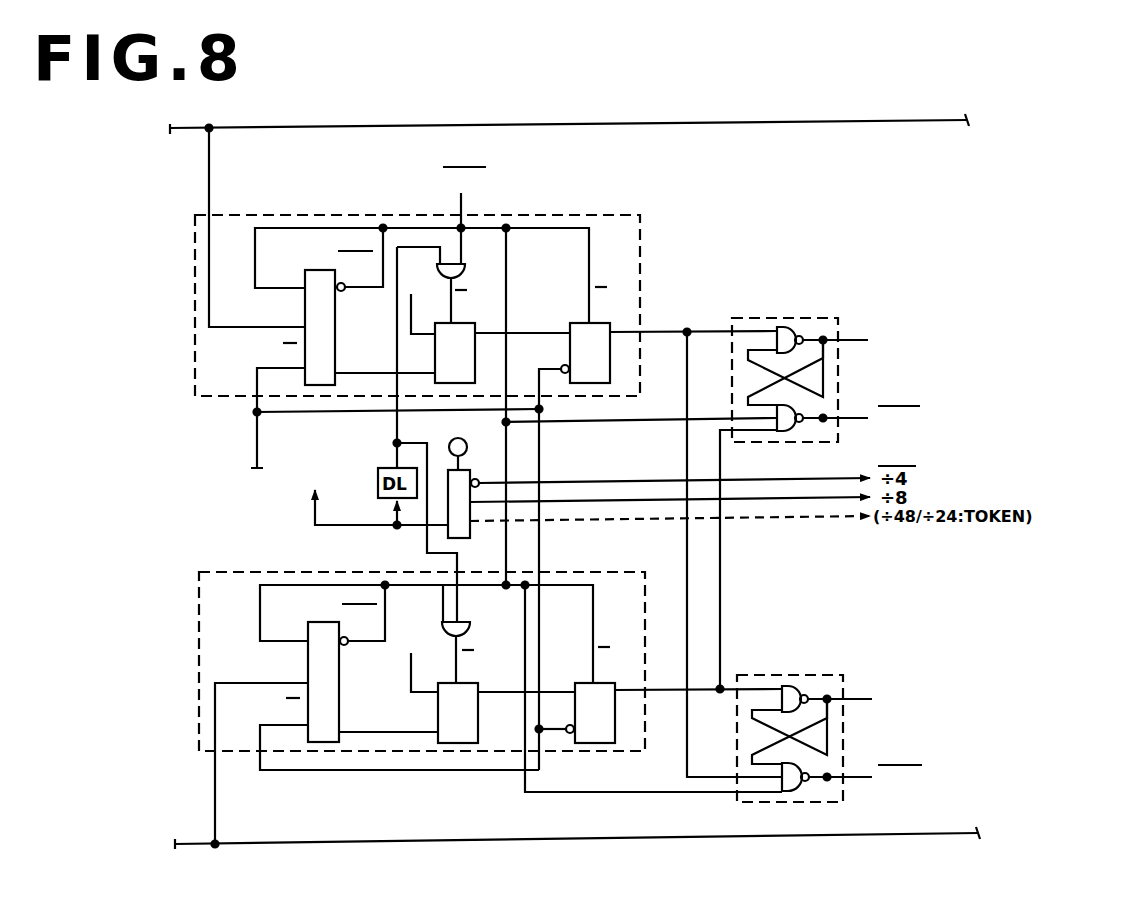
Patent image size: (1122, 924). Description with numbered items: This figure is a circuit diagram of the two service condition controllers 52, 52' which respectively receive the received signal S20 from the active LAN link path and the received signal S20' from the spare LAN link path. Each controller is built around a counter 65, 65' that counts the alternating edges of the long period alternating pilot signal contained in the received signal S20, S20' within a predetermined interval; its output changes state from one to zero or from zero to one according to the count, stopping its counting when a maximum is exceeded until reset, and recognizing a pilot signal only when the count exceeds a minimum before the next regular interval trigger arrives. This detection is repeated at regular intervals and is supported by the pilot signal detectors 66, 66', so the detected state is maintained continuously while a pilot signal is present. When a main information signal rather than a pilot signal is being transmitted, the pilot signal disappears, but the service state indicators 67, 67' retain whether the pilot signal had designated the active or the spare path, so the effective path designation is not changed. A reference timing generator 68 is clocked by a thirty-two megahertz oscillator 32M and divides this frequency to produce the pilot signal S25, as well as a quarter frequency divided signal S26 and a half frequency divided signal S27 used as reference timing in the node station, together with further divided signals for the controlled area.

The service condition controller 52 is at (326, 347).
The service condition controller 52' is at (324, 676).
The counter 65 is at (344, 327).
The counter 65' is at (349, 682).
The pilot signal detector 66 is at (389, 468).
The pilot signal detector 66' is at (377, 654).
The service state indicator 67 is at (820, 485).
The service state indicator 67' is at (829, 722).
The reference timing generator 68 is at (470, 474).
The 32 MHz oscillator 32M is at (464, 442).
The received signal S20 is at (569, 96).
The received signal S20' is at (577, 854).
The pilot signal S25 is at (358, 528).
The 1/4 frequency divided signal S26 is at (594, 478).
The 1/2 frequency divided signal S27 is at (584, 503).